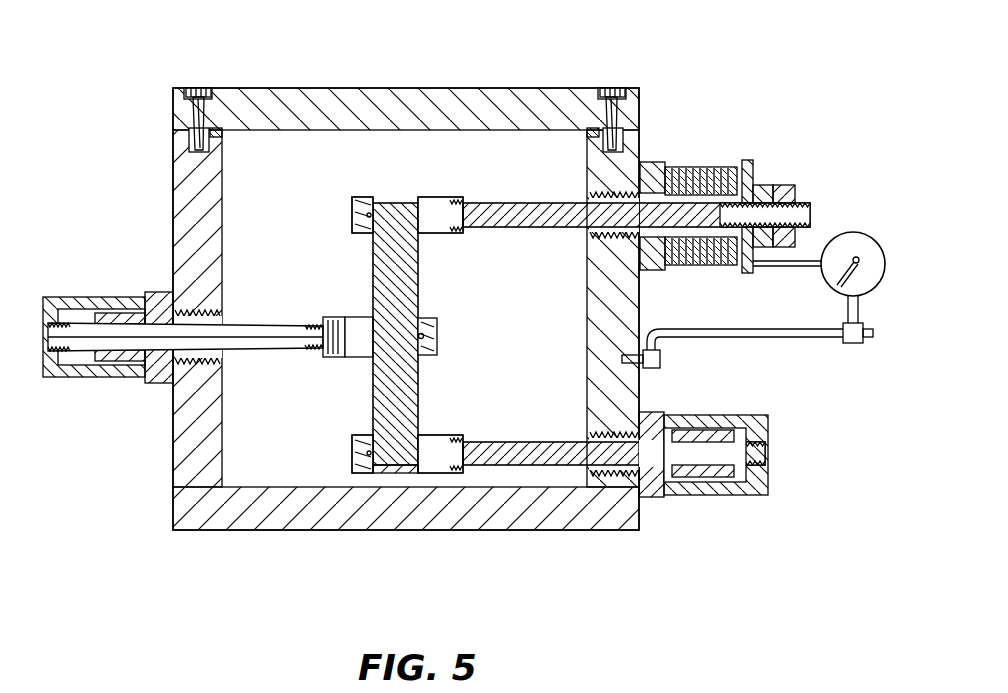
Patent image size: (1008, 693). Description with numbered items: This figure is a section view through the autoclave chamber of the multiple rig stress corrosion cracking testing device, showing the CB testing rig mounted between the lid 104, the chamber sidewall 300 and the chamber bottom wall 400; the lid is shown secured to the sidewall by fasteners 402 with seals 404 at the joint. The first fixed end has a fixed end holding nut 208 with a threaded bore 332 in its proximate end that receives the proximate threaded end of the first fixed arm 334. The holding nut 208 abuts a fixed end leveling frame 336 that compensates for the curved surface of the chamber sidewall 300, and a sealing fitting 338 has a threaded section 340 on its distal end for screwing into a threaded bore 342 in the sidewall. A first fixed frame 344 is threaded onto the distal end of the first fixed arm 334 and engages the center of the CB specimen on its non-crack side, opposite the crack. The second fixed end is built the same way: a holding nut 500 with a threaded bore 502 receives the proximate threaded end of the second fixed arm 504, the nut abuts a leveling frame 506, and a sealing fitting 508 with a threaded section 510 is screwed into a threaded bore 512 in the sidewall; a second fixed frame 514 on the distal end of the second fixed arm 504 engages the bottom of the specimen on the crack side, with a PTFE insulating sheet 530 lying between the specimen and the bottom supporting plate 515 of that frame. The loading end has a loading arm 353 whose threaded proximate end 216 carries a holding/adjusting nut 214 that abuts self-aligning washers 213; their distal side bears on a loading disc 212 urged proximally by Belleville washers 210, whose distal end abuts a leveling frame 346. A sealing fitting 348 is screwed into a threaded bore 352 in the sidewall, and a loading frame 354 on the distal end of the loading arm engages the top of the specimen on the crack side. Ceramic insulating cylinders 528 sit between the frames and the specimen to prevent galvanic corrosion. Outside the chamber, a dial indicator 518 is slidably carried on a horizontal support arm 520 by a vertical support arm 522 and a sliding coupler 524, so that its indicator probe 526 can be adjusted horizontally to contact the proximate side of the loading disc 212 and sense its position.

The lid 104 is at (403, 88).
The fixed end holding nut 208 is at (166, 341).
The Belleville washers 210 is at (700, 167).
The loading disc 212 is at (747, 160).
The self-aligning washers 213 is at (763, 185).
The holding/adjusting nut 214 is at (790, 190).
The threaded proximate end 216 is at (812, 215).
The chamber sidewall 300 is at (175, 168).
The threaded bore 332 is at (43, 345).
The first fixed arm 334 is at (323, 322).
The fixed end leveling frame 336 is at (153, 383).
The sealing fitting 338 is at (93, 380).
The threaded section 340 is at (205, 305).
The threaded bore 342 is at (215, 368).
The first fixed frame 344 is at (437, 348).
The leveling frame 346 is at (650, 162).
The sealing fitting 348 is at (677, 203).
The threaded bore 352 is at (587, 252).
The loading arm 353 is at (500, 200).
The loading frame 354 is at (362, 197).
The chamber bottom wall 400 is at (405, 308).
The screw 402 is at (183, 93).
The seal 404 is at (222, 133).
The holding nut 500 is at (773, 487).
The threaded bore 502 is at (767, 450).
The second fixed arm 504 is at (666, 519).
The leveling frame 506 is at (652, 497).
The sealing fitting 508 is at (698, 480).
The threaded section 510 is at (622, 485).
The threaded bore 512 is at (600, 422).
The second fixed frame 514 is at (352, 468).
The bottom supporting plate 515 is at (420, 473).
The dial indicator 518 is at (876, 243).
The horizontal support arm 520 is at (820, 340).
The vertical support arm 522 is at (860, 308).
The sliding coupler 524 is at (857, 345).
The indicator probe 526 is at (788, 268).
The ceramic insulating cylinders 528 is at (352, 212).
The insulating sheet 530 is at (430, 462).